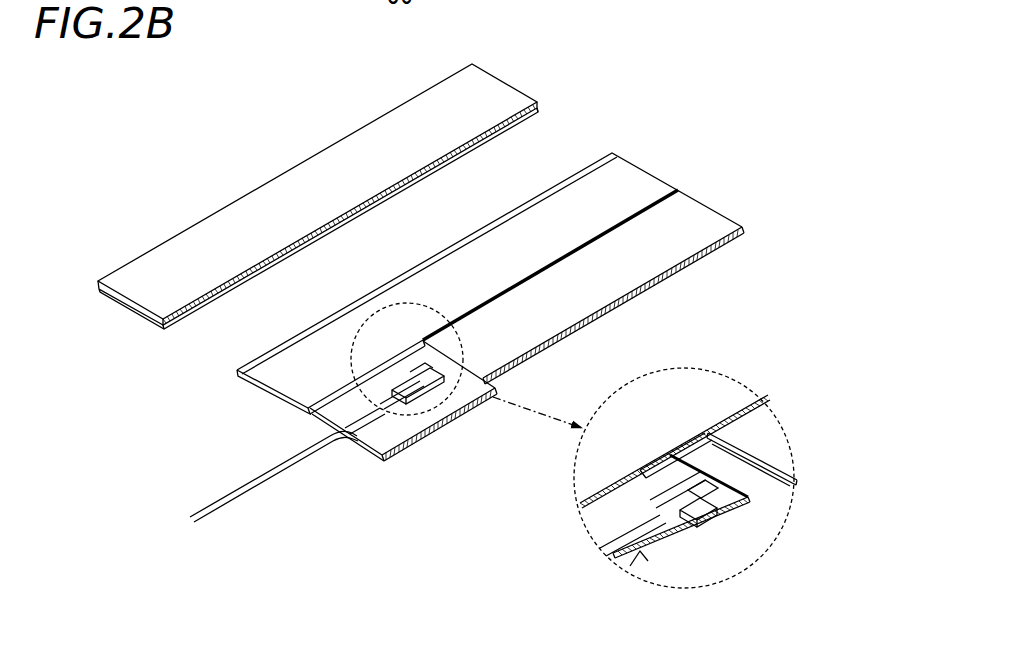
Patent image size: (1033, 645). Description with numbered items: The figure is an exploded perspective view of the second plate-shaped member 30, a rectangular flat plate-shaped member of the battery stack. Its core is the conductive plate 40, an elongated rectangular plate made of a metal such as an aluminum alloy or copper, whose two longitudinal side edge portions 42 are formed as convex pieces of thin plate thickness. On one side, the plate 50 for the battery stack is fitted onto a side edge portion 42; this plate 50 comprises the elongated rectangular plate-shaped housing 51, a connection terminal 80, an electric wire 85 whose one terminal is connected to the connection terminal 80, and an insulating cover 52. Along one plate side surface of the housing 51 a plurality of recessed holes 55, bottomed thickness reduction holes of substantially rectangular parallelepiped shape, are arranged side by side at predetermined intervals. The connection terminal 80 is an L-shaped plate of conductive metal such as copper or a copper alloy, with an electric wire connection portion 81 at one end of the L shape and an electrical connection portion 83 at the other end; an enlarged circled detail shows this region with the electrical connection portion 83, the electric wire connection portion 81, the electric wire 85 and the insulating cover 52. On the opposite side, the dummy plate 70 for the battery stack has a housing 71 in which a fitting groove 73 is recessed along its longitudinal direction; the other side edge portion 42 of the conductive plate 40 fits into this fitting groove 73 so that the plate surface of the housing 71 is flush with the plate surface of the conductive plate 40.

The second plate-shaped member 30 is at (516, 321).
The conductive plate 40 is at (503, 296).
The side edge portion 42 is at (429, 249).
The plate for the battery stack 50 is at (641, 307).
The housing 51 is at (640, 268).
The insulating cover 52 is at (515, 419).
The recessed hole 55 is at (712, 262).
The dummy plate for the battery stack 70 is at (346, 199).
The housing 71 is at (288, 190).
The fitting groove 73 is at (169, 330).
The connection terminal 80 is at (618, 368).
The electric wire connection portion 81 is at (772, 470).
The electrical connection portion 83 is at (420, 345).
The electric wire 85 is at (232, 490).